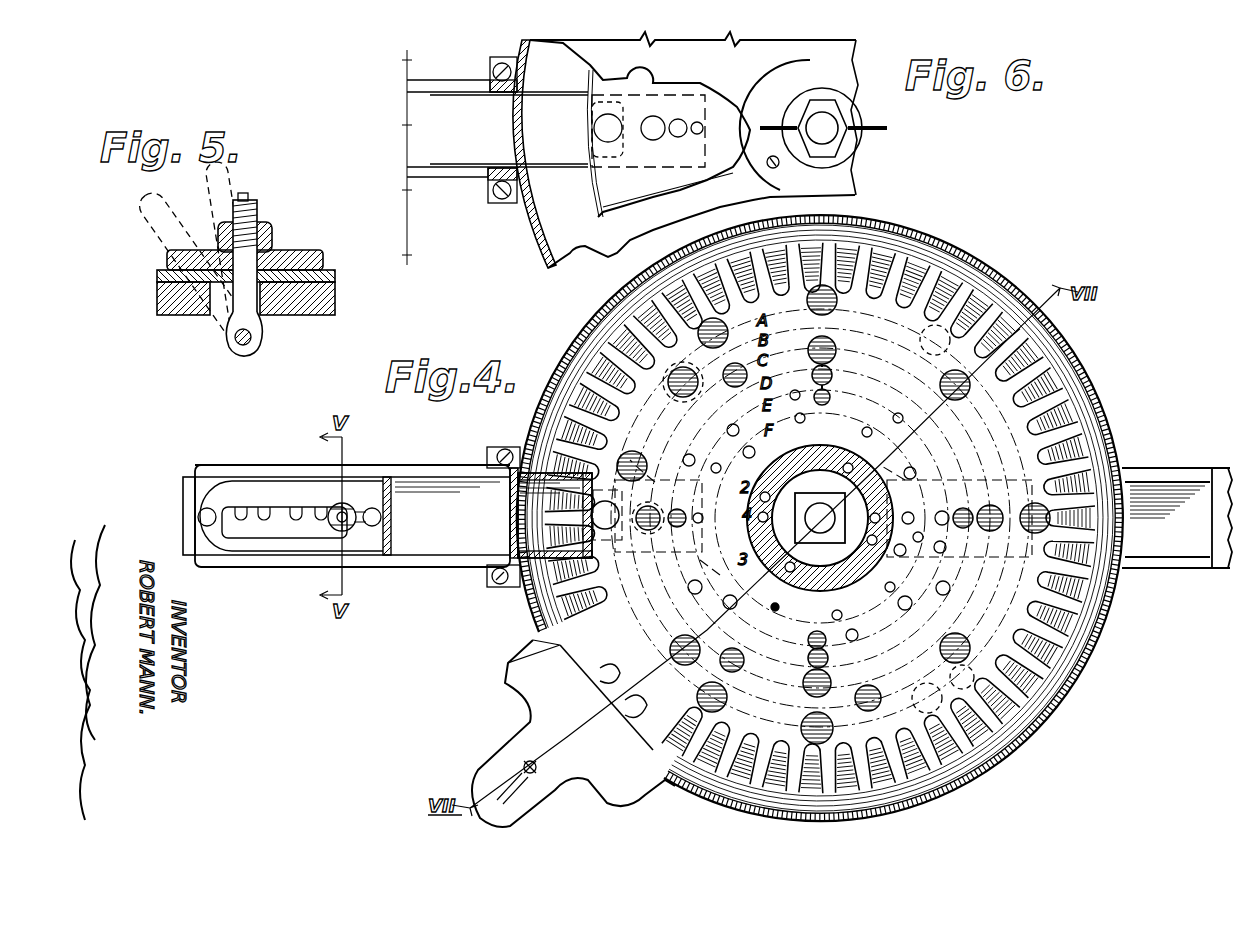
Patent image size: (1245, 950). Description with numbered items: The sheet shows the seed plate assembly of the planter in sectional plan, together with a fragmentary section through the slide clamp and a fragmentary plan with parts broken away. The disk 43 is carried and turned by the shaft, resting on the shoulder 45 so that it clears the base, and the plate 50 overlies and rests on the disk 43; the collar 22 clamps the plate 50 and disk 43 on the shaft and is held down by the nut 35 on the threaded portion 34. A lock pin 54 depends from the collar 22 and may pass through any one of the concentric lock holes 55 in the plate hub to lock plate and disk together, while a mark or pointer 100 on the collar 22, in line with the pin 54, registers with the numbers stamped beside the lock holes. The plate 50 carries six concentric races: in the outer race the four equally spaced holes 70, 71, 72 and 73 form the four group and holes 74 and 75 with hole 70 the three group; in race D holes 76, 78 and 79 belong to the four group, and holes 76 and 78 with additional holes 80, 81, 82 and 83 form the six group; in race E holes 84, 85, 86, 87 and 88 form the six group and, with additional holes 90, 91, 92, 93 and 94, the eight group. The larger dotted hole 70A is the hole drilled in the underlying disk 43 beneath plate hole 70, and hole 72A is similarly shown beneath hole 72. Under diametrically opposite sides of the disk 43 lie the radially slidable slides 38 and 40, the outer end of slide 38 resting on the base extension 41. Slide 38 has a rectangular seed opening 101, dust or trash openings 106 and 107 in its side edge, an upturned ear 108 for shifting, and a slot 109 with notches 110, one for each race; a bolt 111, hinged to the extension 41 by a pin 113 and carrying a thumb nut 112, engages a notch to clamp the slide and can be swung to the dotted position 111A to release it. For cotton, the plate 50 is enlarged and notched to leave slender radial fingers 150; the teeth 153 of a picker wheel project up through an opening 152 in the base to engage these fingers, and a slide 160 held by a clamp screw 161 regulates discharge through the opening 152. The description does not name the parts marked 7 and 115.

In FIG. 6, the arm 7 is at (752, 172).
In FIG. 6, the collar 22 is at (783, 105).
In FIG. 6, the threaded portion 34 is at (832, 127).
In FIG. 6, the nut 35 is at (842, 143).
In FIG. 5, the movable slide 38 is at (320, 278).
In FIG. 4, the movable slide 38 is at (455, 535).
In FIG. 4, the second slide 40 is at (1183, 537).
In FIG. 6, the base extension 41 is at (460, 172).
In FIG. 5, the base extension 41 is at (292, 310).
In FIG. 4, the base extension 41 is at (398, 477).
In FIG. 6, the disk 43 is at (617, 190).
In FIG. 4, the shoulder 45 is at (806, 416).
In FIG. 6, the plate 50 is at (622, 223).
In FIG. 4, the plate 50 is at (1135, 328).
In FIG. 6, the lock pin 54 is at (771, 158).
In FIG. 4, the lock pin 54 is at (755, 530).
In FIG. 4, the lock holes 55 is at (775, 496).
In FIG. 4, the hole 70 is at (1040, 503).
In FIG. 4, the underlying disk hole 70A is at (1030, 557).
In FIG. 4, the hole 71 is at (833, 730).
In FIG. 4, the hole 72 is at (607, 530).
In FIG. 4, the cam follower 72A is at (621, 560).
In FIG. 4, the hole 73 is at (806, 298).
In FIG. 4, the hole 74 is at (728, 697).
In FIG. 4, the hole 75 is at (720, 325).
In FIG. 4, the hole 76 is at (832, 376).
In FIG. 4, the hole 78 is at (808, 658).
In FIG. 4, the hole 79 is at (678, 527).
In FIG. 4, the hole 80 is at (956, 402).
In FIG. 4, the hole 81 is at (948, 593).
In FIG. 4, the hole 82 is at (690, 592).
In FIG. 4, the hole 83 is at (684, 462).
In FIG. 4, the hole 84 is at (790, 401).
In FIG. 4, the hole 85 is at (904, 556).
In FIG. 4, the hole 86 is at (858, 635).
In FIG. 4, the hole 87 is at (734, 608).
In FIG. 4, the hole 88 is at (716, 470).
In FIG. 4, the hole 90 is at (940, 512).
In FIG. 4, the hole 91 is at (908, 609).
In FIG. 4, the hole 92 is at (810, 637).
In FIG. 4, the hole 93 is at (690, 522).
In FIG. 4, the hole 94 is at (730, 426).
In FIG. 6, the pointer 100 is at (790, 165).
In FIG. 4, the rectangular opening 101 is at (650, 548).
In FIG. 4, the trash opening 106 is at (640, 395).
In FIG. 4, the trash opening 107 is at (632, 452).
In FIG. 4, the ear 108 is at (185, 495).
In FIG. 4, the slot 109 is at (252, 530).
In FIG. 4, the notches 110 is at (302, 528).
In FIG. 5, the bolt 111 is at (248, 205).
In FIG. 4, the bolt 111 is at (352, 524).
In FIG. 5, the dotted bolt position 111A is at (195, 215).
In FIG. 5, the thumb nut 112 is at (262, 232).
In FIG. 4, the thumb nut 112 is at (350, 515).
In FIG. 5, the pin 113 is at (236, 340).
In FIG. 4, the block 115 is at (390, 527).
In FIG. 4, the fingers 150 is at (648, 684).
In FIG. 4, the opening 152 is at (630, 748).
In FIG. 4, the teeth 153 is at (655, 676).
In FIG. 4, the slide 160 is at (532, 698).
In FIG. 4, the clamp screw 161 is at (520, 762).